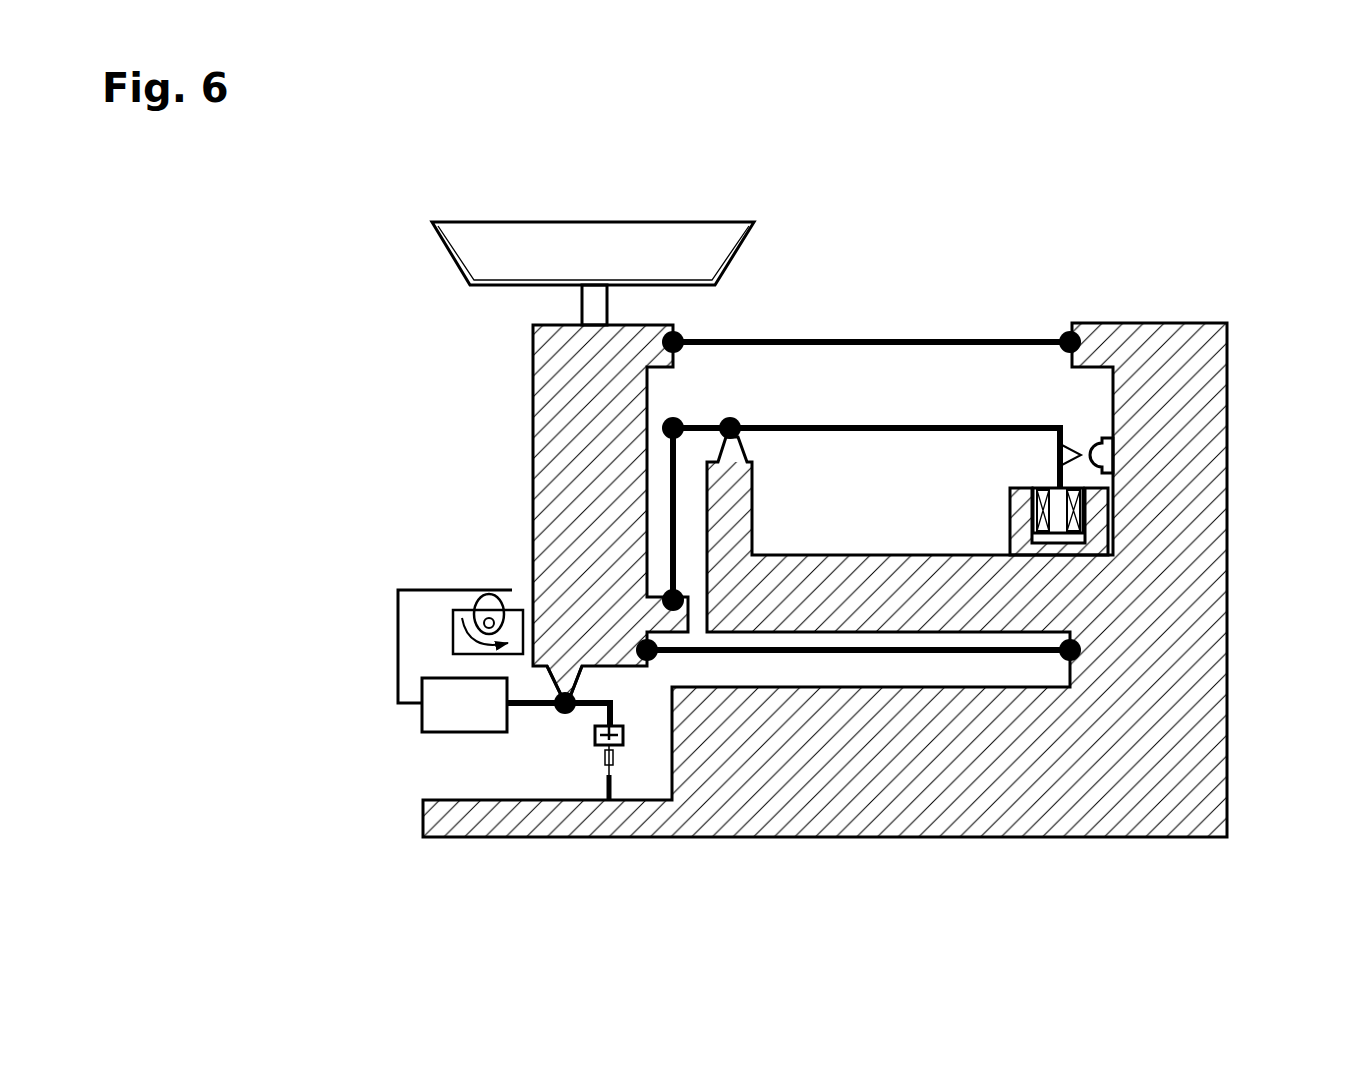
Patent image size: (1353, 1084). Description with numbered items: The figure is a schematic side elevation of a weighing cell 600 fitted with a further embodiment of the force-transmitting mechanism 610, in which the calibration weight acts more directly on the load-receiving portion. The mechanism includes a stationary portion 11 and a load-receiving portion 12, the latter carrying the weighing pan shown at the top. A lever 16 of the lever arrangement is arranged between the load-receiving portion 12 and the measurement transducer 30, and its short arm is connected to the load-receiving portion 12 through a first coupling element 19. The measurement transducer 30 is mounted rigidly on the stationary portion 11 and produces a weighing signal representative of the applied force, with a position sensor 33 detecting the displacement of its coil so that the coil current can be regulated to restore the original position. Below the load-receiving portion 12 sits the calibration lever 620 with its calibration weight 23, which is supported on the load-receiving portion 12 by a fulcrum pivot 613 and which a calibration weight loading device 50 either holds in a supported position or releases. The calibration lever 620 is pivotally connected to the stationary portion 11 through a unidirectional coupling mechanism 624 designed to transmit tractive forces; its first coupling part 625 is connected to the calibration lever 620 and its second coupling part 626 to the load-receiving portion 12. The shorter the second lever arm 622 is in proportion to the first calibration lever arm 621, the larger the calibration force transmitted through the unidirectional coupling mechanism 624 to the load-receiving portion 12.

The weighing cell 600 is at (1153, 293).
The stationary portion 11 is at (825, 580).
The load-receiving portion 12 is at (610, 511).
The lever 16 is at (817, 423).
The first coupling element 19 is at (672, 487).
The measurement transducer 30 is at (985, 503).
The position sensor 33 is at (1090, 432).
The calibration weight loading device 50 is at (420, 623).
The calibration weight 23 is at (464, 705).
The force-transmitting mechanism 610 is at (793, 510).
The fulcrum pivot 613 is at (608, 675).
The calibration lever 620 is at (533, 685).
The first calibration lever arm 621 is at (560, 699).
The second lever arm 622 is at (628, 682).
The unidirectional coupling mechanism 624 is at (587, 758).
The first coupling part 625 is at (606, 712).
The second coupling part 626 is at (608, 768).